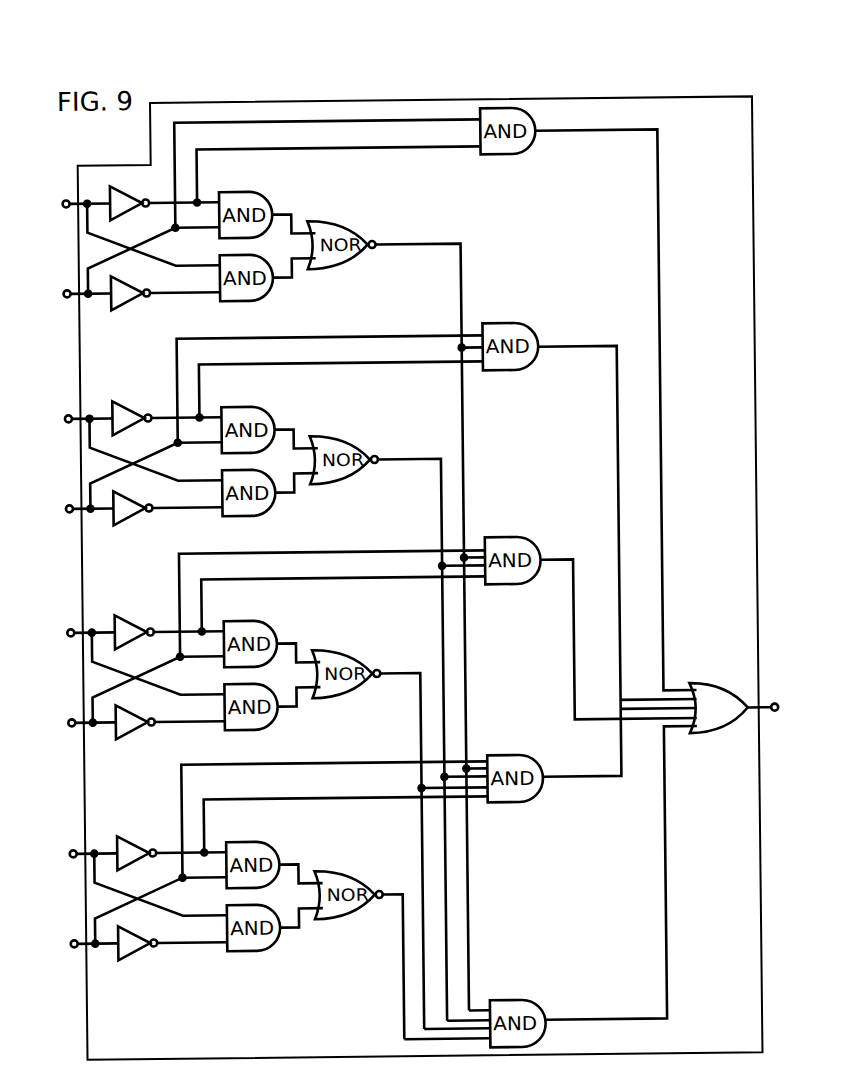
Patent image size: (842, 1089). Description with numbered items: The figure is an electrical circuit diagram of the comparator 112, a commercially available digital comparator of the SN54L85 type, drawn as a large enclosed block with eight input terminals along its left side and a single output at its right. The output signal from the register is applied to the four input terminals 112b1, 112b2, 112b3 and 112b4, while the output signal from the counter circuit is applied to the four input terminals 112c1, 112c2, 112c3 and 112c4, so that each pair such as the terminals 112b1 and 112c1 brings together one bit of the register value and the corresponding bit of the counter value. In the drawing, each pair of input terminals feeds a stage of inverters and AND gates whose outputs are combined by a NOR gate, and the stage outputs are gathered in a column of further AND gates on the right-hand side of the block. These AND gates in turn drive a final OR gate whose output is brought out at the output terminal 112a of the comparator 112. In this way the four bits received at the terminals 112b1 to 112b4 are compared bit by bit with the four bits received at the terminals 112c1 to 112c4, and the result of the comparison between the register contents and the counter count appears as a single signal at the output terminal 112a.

The comparator 112 is at (522, 104).
The output terminal of the comparator 112a is at (766, 711).
The first input terminal 112b1 is at (65, 199).
The first input terminal 112c1 is at (65, 288).
The second input terminal 112b2 is at (65, 414).
The second input terminal 112c2 is at (65, 504).
The third input terminal 112b3 is at (65, 628).
The third input terminal 112c3 is at (65, 717).
The fourth input terminal 112b4 is at (65, 849).
The fourth input terminal 112c4 is at (65, 940).